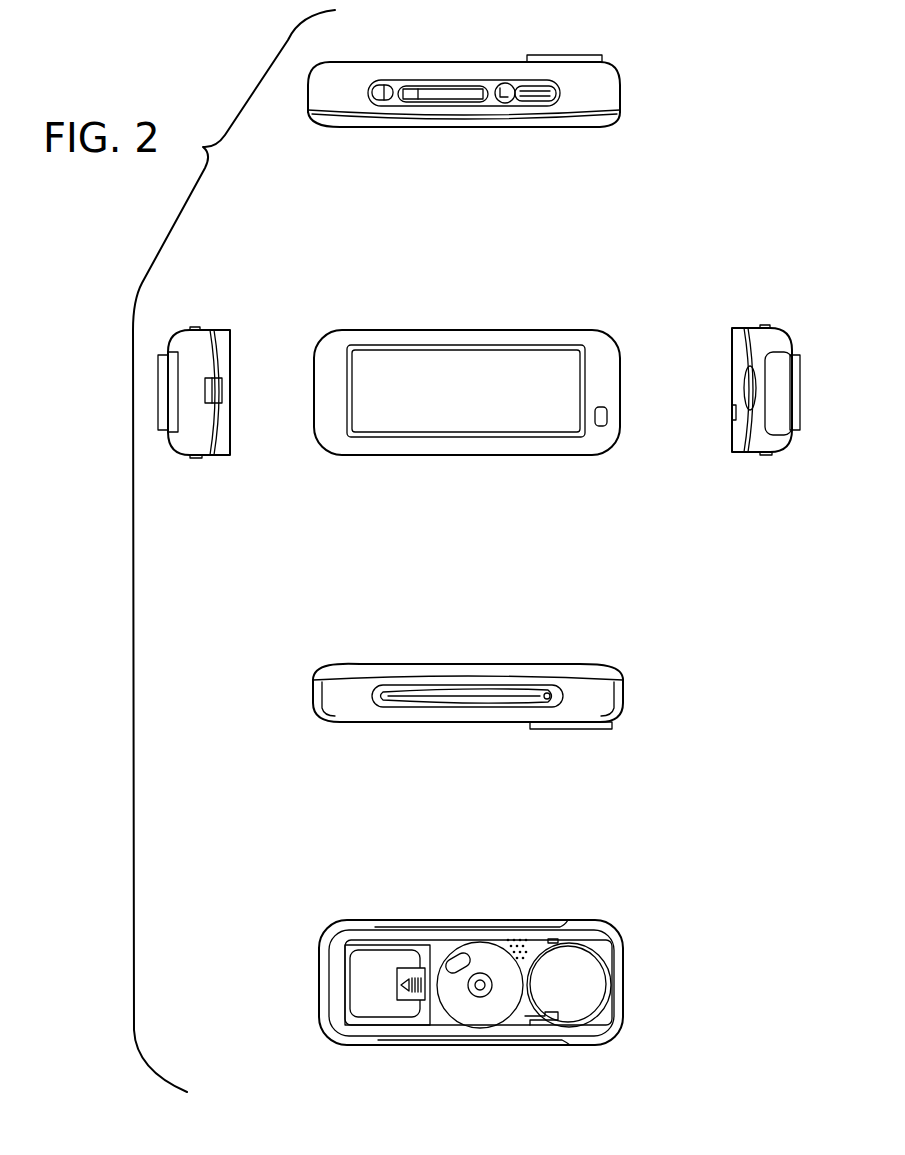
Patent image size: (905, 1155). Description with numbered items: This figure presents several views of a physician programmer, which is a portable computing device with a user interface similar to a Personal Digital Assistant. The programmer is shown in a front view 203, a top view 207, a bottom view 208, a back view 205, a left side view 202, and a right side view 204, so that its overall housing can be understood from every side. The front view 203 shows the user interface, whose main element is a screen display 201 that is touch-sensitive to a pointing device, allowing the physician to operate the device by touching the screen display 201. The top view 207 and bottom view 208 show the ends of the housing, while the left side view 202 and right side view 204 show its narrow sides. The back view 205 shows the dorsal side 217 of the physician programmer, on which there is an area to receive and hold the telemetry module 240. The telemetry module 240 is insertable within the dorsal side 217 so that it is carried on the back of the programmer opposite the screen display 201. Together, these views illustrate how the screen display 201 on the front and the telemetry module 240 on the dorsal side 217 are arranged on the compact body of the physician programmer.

The screen display 201 is at (538, 367).
The left side view 202 is at (438, 128).
The front view 203 is at (476, 389).
The right side view 204 is at (468, 724).
The back view 205 is at (498, 983).
The top view 207 is at (745, 455).
The bottom view 208 is at (195, 458).
The dorsal side 217 is at (508, 697).
The telemetry module 240 is at (570, 959).